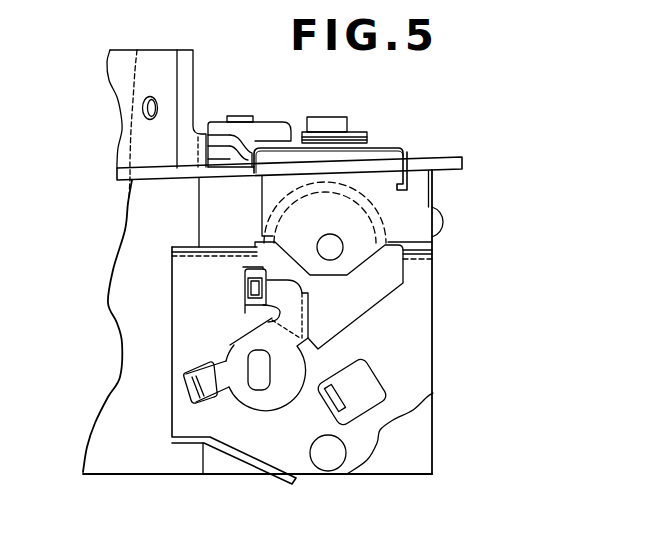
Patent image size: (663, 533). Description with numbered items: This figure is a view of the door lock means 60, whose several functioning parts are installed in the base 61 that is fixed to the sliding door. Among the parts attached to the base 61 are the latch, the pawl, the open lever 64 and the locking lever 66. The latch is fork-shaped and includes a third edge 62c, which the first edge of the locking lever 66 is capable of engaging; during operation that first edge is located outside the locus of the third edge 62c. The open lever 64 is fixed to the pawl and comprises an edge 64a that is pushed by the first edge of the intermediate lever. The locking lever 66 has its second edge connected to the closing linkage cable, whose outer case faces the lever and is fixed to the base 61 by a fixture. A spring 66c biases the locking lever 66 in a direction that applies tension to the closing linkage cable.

The door lock means 60 is at (148, 308).
The base 61 is at (185, 92).
The third edge 62c is at (444, 223).
The open lever 64 is at (267, 398).
The edge 64a is at (197, 388).
The locking lever 66 is at (448, 158).
The spring 66c is at (363, 132).